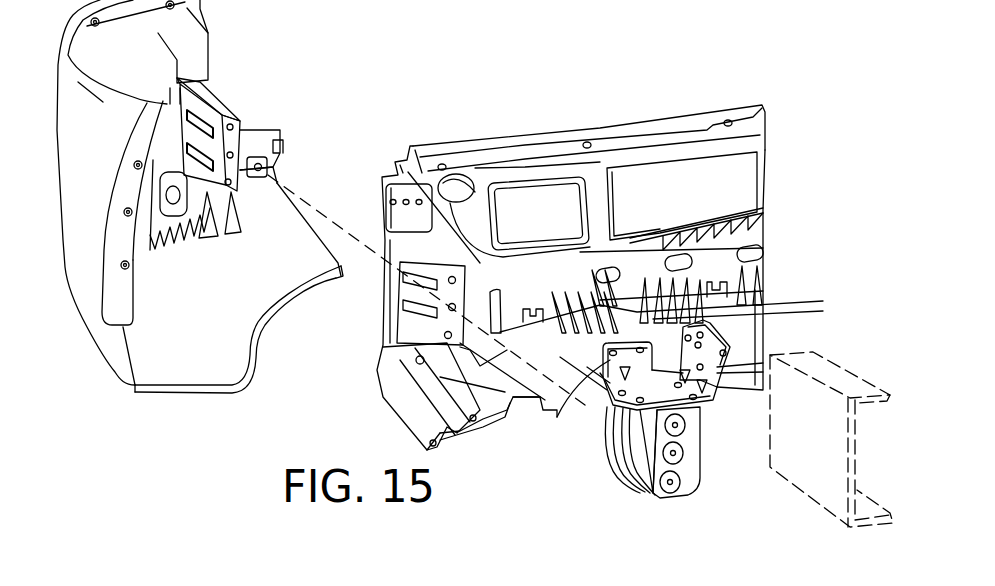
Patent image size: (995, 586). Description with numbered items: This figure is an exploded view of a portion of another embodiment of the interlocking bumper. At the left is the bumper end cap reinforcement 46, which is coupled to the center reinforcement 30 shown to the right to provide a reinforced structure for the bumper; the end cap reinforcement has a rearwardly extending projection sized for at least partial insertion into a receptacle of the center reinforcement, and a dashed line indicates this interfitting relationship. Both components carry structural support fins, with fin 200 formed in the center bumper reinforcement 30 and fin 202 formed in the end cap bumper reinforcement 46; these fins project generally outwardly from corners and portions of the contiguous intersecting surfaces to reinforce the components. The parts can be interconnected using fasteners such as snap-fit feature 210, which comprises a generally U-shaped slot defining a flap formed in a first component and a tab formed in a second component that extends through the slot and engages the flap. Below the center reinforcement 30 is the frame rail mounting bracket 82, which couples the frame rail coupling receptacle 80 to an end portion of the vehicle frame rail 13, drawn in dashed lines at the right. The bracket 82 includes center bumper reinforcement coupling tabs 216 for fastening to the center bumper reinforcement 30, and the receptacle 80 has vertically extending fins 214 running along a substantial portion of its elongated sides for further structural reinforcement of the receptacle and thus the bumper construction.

The frame rail 13 is at (787, 485).
The center reinforcement 30 is at (628, 292).
The bumper end cap reinforcement 46 is at (227, 404).
The frame rail coupling receptacle 80 is at (625, 488).
The frame rail mounting bracket 82 is at (728, 407).
The structural support fin 200 is at (690, 308).
The structural support fin 202 is at (222, 213).
The snap-fit feature 210 is at (724, 288).
The vertically extending fin 214 is at (627, 433).
The center bumper reinforcement coupling tab 216 is at (603, 358).